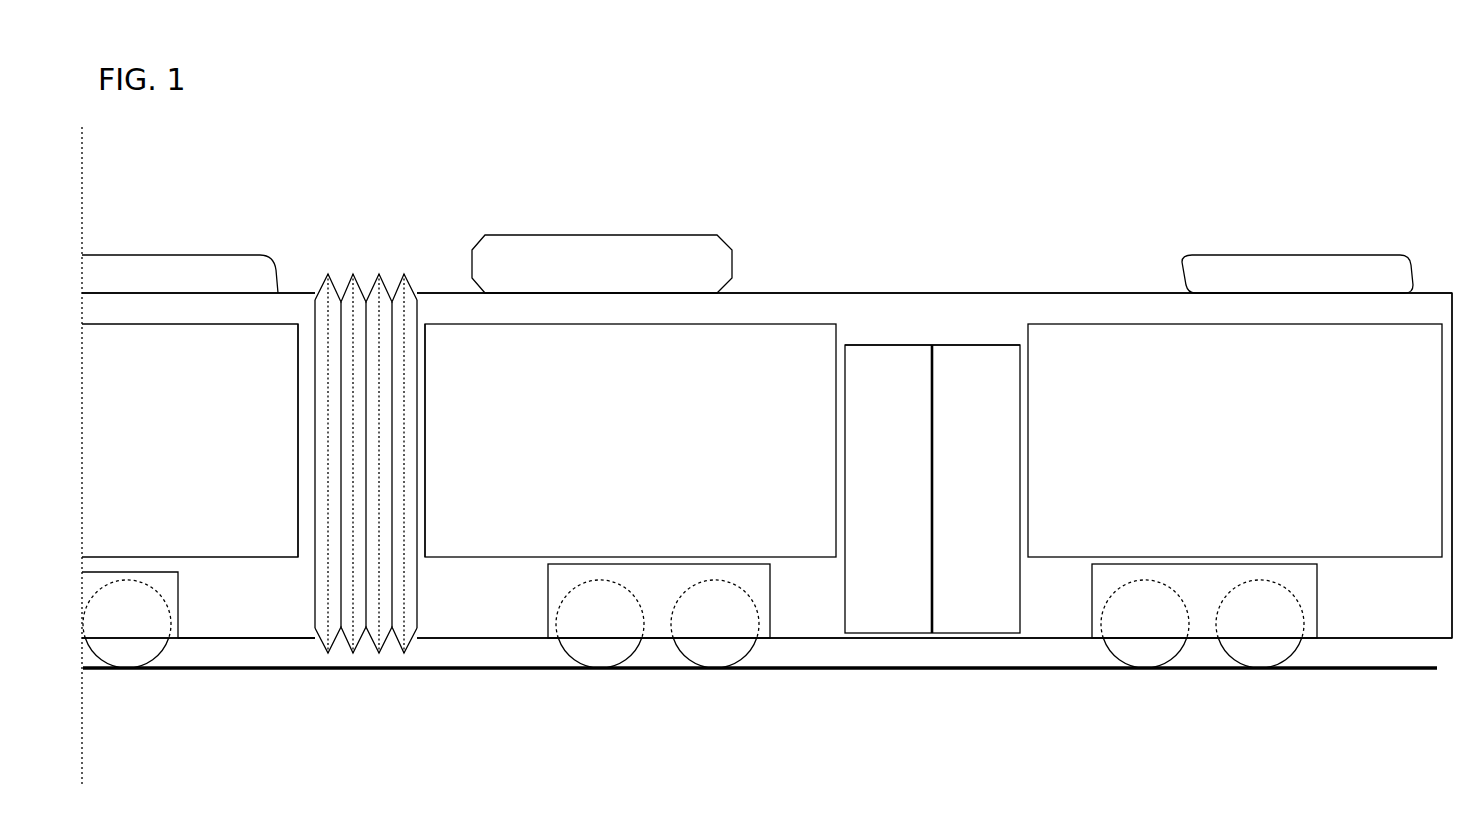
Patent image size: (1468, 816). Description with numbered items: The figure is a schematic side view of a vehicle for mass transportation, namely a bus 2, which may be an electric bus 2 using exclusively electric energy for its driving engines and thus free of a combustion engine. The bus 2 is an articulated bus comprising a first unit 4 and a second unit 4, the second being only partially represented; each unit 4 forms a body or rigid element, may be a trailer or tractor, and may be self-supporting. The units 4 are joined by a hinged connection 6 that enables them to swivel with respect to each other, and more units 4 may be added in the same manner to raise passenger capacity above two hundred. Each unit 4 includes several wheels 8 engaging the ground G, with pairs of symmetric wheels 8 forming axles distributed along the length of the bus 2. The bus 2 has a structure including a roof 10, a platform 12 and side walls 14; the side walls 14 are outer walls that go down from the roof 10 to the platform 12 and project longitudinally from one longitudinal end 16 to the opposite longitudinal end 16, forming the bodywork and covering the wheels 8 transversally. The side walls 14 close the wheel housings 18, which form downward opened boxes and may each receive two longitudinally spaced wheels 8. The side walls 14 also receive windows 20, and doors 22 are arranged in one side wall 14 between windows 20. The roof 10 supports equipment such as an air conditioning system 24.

The bus 2 is at (762, 118).
The unit 4 is at (251, 213).
The hinged connection 6 is at (368, 655).
The wheel 8 is at (130, 655).
The roof 10 is at (930, 293).
The platform 12 is at (250, 645).
The side wall 14 is at (265, 606).
The longitudinal end 16 is at (425, 330).
The wheel housing 18 is at (170, 592).
The window 20 is at (148, 395).
The door 22 is at (903, 475).
The air conditioning system 24 is at (618, 280).
The ground G is at (815, 672).